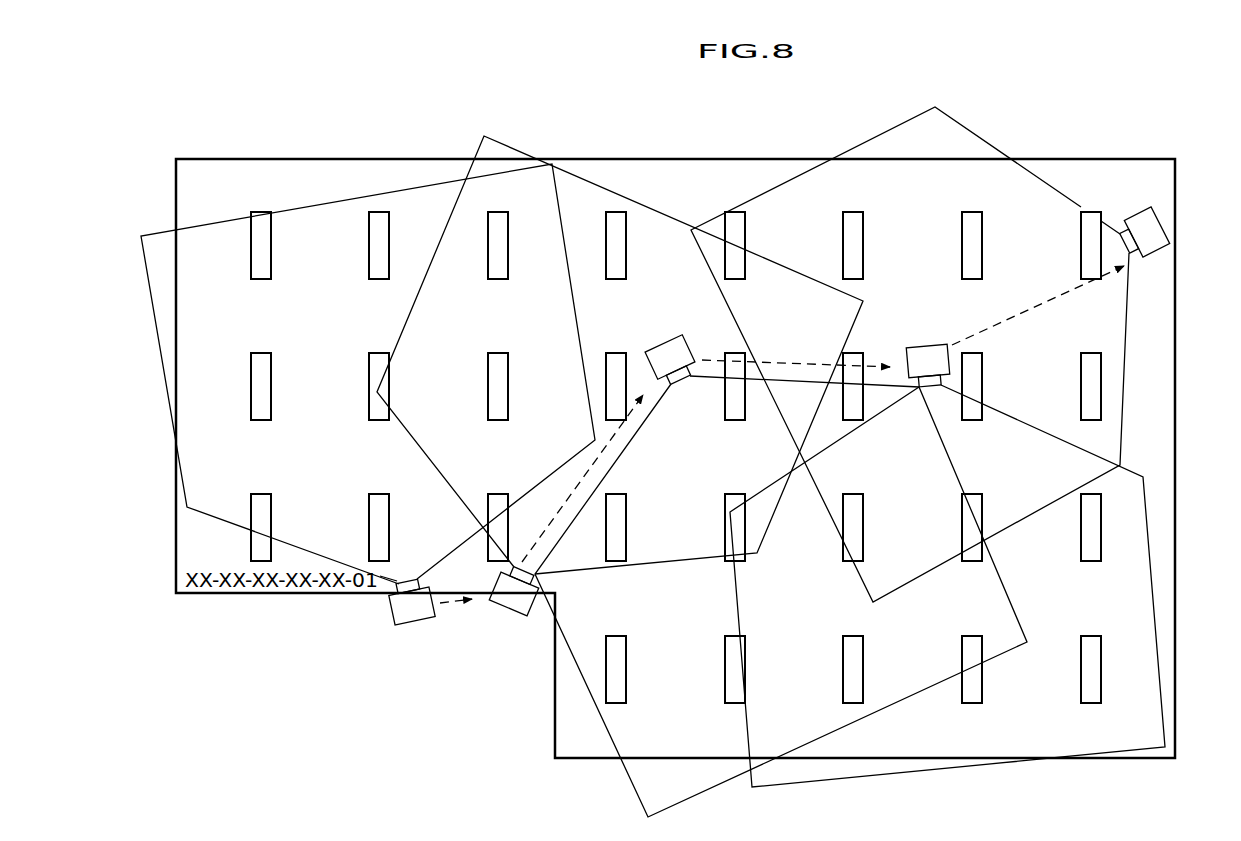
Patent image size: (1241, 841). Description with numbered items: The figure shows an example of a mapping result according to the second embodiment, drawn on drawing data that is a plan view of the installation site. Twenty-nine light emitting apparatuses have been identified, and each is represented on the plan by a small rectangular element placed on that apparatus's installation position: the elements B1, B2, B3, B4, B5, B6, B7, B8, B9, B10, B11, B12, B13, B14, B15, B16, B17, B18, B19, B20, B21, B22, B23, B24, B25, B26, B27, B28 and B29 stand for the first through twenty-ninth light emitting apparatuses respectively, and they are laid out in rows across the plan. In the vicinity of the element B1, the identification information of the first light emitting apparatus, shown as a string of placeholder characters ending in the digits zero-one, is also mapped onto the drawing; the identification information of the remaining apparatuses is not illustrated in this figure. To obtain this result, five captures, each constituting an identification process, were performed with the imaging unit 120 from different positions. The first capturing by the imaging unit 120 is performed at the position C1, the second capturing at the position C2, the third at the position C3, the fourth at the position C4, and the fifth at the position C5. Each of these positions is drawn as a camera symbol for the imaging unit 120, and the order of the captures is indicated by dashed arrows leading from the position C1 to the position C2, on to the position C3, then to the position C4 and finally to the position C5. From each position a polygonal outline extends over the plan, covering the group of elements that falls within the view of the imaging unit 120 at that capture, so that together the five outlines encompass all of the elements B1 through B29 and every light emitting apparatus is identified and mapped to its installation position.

The imaging unit 120 is at (413, 623).
The position C1 is at (390, 608).
The position C2 is at (532, 617).
The position C3 is at (677, 338).
The position C4 is at (946, 343).
The position C5 is at (1166, 230).
The element B1 is at (272, 508).
The element B2 is at (390, 508).
The element B3 is at (487, 495).
The element B4 is at (272, 372).
The element B5 is at (390, 372).
The element B6 is at (509, 372).
The element B7 is at (272, 252).
The element B8 is at (390, 252).
The element B9 is at (509, 252).
The element B10 is at (627, 648).
The element B11 is at (723, 648).
The element B12 is at (864, 648).
The element B13 is at (960, 648).
The element B14 is at (1100, 648).
The element B15 is at (649, 496).
The element B16 is at (724, 508).
The element B17 is at (864, 507).
The element B18 is at (983, 507).
The element B19 is at (1100, 545).
The element B20 is at (612, 352).
The element B21 is at (726, 352).
The element B22 is at (864, 354).
The element B23 is at (1008, 359).
The element B24 is at (1080, 398).
The element B25 is at (627, 260).
The element B26 is at (746, 240).
The element B27 is at (864, 250).
The element B28 is at (1007, 237).
The element B29 is at (1080, 258).